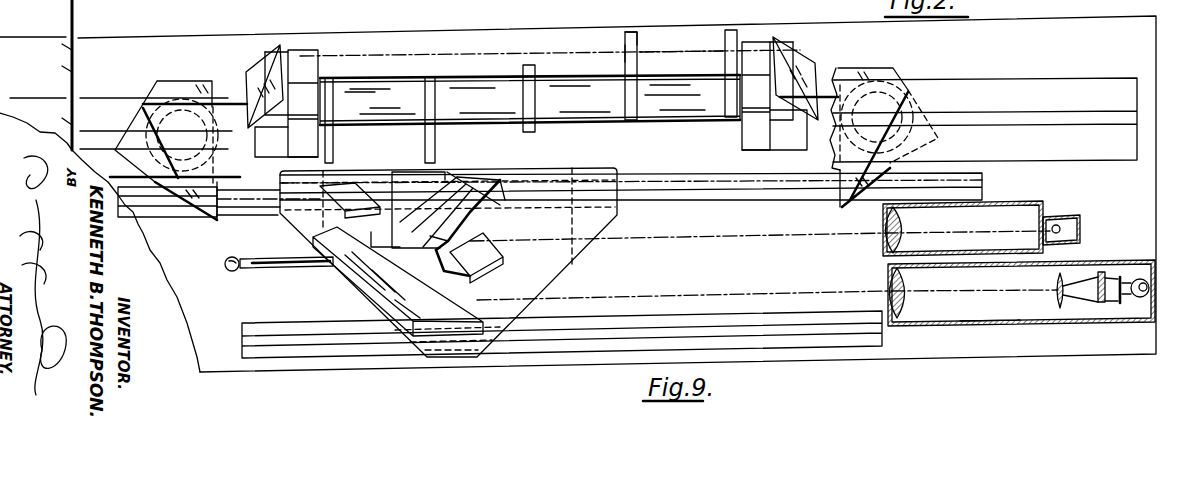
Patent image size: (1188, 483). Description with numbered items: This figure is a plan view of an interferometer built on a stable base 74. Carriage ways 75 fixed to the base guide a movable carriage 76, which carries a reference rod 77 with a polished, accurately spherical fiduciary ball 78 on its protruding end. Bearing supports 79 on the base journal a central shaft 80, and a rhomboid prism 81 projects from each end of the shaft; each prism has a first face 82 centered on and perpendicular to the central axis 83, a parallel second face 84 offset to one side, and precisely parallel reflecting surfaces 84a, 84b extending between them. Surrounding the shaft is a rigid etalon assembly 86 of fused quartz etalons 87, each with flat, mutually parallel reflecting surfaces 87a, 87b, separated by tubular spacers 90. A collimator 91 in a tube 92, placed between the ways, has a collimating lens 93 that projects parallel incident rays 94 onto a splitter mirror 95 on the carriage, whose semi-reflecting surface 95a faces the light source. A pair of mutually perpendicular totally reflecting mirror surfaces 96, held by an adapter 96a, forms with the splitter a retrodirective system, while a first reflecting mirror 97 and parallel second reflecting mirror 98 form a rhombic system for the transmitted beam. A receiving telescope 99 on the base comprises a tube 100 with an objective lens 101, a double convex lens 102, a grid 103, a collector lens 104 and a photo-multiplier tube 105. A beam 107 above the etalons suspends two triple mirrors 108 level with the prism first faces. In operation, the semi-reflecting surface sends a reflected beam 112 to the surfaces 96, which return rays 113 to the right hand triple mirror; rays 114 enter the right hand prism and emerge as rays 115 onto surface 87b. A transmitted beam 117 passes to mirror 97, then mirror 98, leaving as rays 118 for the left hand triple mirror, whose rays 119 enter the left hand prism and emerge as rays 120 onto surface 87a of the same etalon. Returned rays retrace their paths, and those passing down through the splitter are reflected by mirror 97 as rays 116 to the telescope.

The stable base 74 is at (108, 38).
The carriage ways 75 is at (245, 337).
The movable carriage 76 is at (574, 262).
The reference rod 77 is at (302, 258).
The fiduciary ball 78 is at (224, 265).
The bearing supports 79 is at (318, 50).
The central shaft 80 is at (326, 78).
The rhomboid prism 81 is at (275, 52).
The first face 82 is at (246, 100).
The central axis 83 is at (682, 92).
The second face 84 is at (292, 50).
The reflecting surface 84a is at (531, 133).
The reflecting surface 84b is at (268, 52).
The etalon assembly 86 is at (593, 128).
The fused quartz etalon 87 is at (619, 65).
The reflecting surface 87a is at (622, 48).
The reflecting surface 87b is at (640, 60).
The tubular spacer 90 is at (412, 76).
The collimator 91 is at (1069, 214).
The tube 92 is at (1018, 204).
The collimating lens 93 is at (885, 243).
The incident rays 94 is at (703, 236).
The splitter mirror 95 is at (487, 284).
The semi-reflecting surface 95a is at (488, 262).
The totally reflecting mirror surfaces 96 is at (487, 182).
The adapter 96a is at (395, 185).
The first reflecting mirror 97 is at (372, 291).
The second reflecting mirror 98 is at (353, 182).
The receiving telescope 99 is at (1020, 323).
The tube 100 is at (990, 325).
The objective lens 101 is at (887, 286).
The double convex lens 102 is at (1055, 275).
The grid 103 is at (1096, 272).
The collector lens 104 is at (1113, 304).
The photo-multiplier tube 105 is at (1137, 297).
The beam 107 is at (128, 100).
The triple mirror 108 is at (170, 70).
The reflected beam 112 is at (448, 172).
The rays 113 is at (647, 180).
The rays 114 is at (832, 93).
The rays 115 is at (680, 42).
The rays 116 is at (642, 298).
The transmitted beam 117 is at (387, 239).
The rays 118 is at (260, 205).
The rays 119 is at (201, 80).
The rays 120 is at (450, 55).